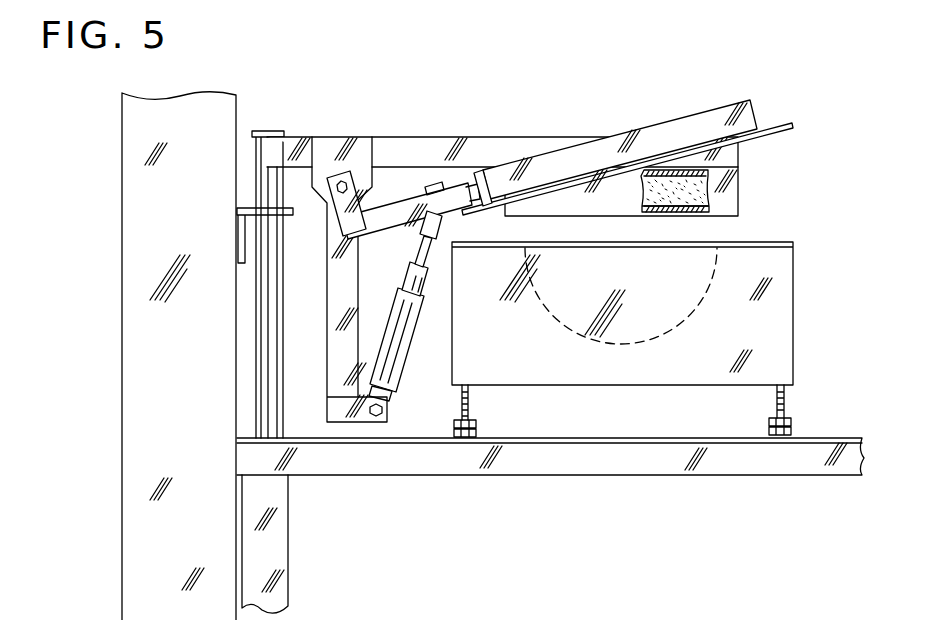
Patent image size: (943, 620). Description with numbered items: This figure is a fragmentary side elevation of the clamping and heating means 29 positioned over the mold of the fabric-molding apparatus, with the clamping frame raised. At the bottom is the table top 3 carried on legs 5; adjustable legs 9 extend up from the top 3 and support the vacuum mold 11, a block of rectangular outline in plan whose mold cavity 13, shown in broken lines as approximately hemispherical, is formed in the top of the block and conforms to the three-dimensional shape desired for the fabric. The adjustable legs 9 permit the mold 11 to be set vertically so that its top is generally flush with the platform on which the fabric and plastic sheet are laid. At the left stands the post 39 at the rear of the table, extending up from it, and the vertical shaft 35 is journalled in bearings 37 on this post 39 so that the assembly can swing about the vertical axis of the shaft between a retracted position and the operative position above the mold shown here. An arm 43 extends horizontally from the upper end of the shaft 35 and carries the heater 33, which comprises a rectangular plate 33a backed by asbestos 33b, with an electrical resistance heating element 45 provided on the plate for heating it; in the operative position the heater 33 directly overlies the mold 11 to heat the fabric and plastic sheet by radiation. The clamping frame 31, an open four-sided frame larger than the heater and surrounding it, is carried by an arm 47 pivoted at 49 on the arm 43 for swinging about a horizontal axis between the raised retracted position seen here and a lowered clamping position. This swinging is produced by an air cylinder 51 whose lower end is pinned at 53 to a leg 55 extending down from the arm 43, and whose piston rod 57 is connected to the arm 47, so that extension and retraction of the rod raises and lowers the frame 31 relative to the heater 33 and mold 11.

The top 3 is at (597, 477).
The legs 5 is at (288, 580).
The adjustable legs 9 is at (470, 402).
The vacuum mold 11 is at (793, 328).
The mold cavity 13 is at (648, 342).
The clamping and heating means 29 is at (770, 90).
The clamping frame 31 is at (793, 126).
The heater 33 is at (740, 207).
The rectangular plate 33a is at (650, 215).
The asbestos 33b is at (710, 188).
The vertical shaft 35 is at (265, 318).
The bearings 37 is at (237, 212).
The post 39 is at (122, 377).
The arm 43 is at (440, 137).
The electrical resistance heating element 45 is at (672, 170).
The arm 47 is at (395, 231).
The pivot 49 is at (338, 176).
The air cylinder 51 is at (405, 360).
The pin 53 is at (382, 412).
The leg 55 is at (328, 381).
The piston rod 57 is at (430, 258).